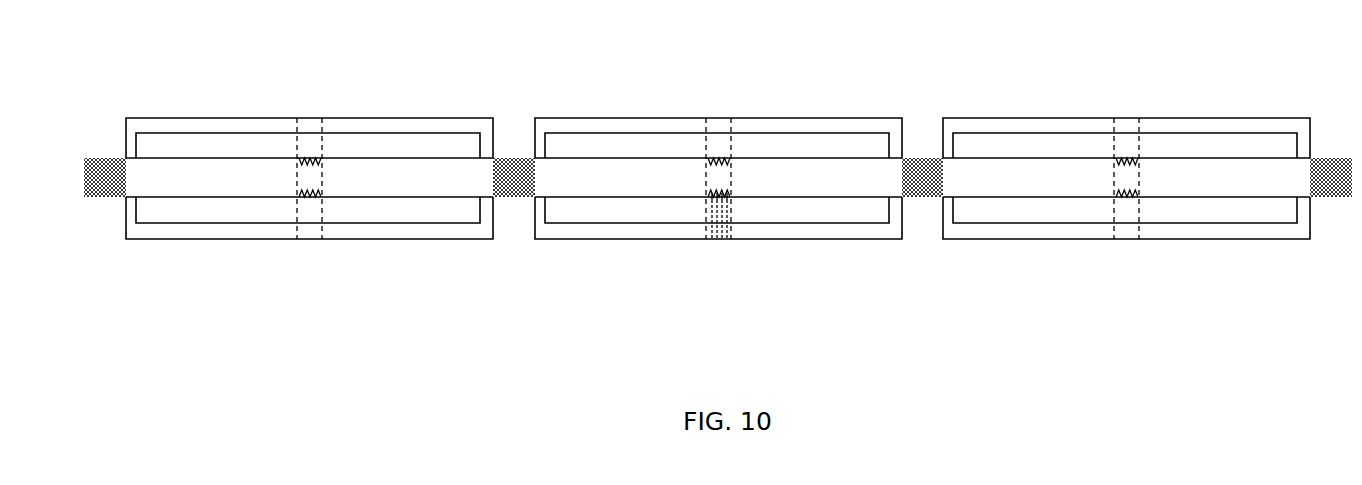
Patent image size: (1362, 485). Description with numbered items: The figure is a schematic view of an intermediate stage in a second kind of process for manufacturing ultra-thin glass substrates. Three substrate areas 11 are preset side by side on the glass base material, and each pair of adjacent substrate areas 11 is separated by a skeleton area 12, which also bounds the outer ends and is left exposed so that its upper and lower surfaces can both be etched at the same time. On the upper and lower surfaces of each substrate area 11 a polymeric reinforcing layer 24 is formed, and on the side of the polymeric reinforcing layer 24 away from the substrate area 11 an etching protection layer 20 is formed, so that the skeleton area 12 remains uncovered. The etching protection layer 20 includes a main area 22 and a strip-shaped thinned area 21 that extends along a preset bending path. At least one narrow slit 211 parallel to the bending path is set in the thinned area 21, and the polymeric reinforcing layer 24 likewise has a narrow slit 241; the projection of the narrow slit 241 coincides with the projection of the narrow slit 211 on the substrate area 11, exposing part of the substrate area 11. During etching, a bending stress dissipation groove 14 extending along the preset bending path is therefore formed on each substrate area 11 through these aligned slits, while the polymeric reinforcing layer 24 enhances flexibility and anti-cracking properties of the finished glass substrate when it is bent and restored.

The substrate area 11 is at (718, 177).
The skeleton area 12 is at (104, 180).
The bending stress dissipation groove 14 is at (303, 197).
The etching protection layer 20 is at (140, 117).
The thinned area 21 is at (306, 131).
The main area 22 is at (196, 128).
The polymeric reinforcing layer 24 is at (414, 148).
The narrow slit 211 is at (707, 233).
The narrow slit 241 is at (716, 203).